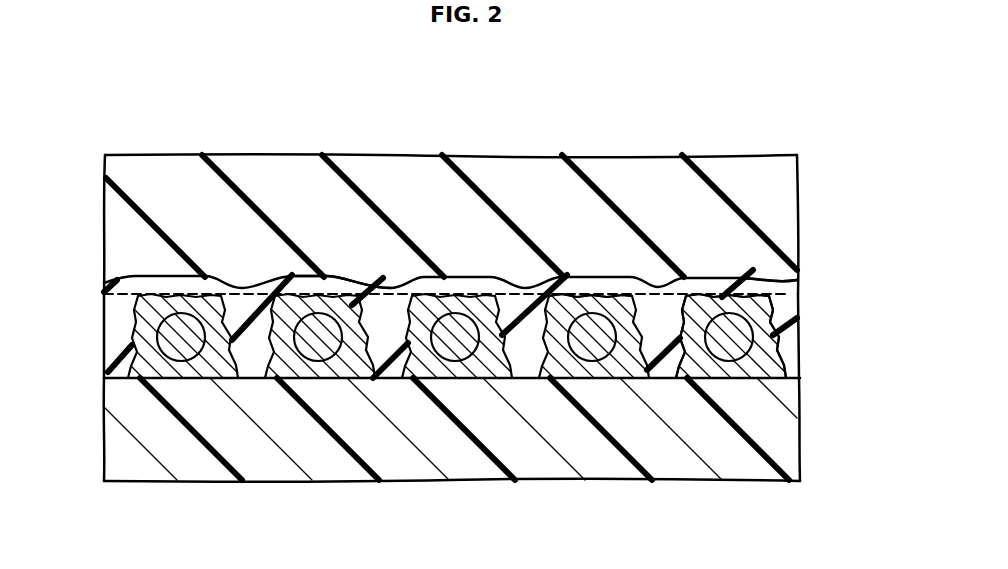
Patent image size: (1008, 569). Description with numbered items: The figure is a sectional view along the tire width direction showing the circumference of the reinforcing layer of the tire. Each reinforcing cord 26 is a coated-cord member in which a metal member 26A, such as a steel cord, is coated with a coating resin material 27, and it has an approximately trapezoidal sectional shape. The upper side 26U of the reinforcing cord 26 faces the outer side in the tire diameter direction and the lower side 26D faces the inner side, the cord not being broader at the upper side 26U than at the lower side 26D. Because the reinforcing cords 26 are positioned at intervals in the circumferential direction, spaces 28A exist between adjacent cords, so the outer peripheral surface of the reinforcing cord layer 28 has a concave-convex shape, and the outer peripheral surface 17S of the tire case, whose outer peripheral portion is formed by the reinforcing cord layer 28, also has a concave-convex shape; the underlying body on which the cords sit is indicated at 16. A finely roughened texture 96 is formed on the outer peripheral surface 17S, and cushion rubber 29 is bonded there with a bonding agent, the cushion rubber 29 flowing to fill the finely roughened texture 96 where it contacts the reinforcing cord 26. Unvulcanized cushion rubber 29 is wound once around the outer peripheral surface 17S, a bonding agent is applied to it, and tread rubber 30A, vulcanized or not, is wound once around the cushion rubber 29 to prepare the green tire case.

The tread rubber 30A is at (618, 165).
The cushion rubber 29 is at (147, 284).
The outer peripheral surface of tire case 17S is at (331, 291).
The coating resin material 27 is at (751, 302).
The reinforcing cord layer 28 is at (129, 288).
The finely roughened texture 96 is at (513, 298).
The spaces 28A is at (245, 350).
The reinforcing cord 26 is at (790, 367).
The metal member 26A is at (782, 348).
The upper side of reinforcing cord 26U is at (590, 297).
The lower side of reinforcing cord 26D is at (622, 381).
The substrate 16 is at (585, 457).